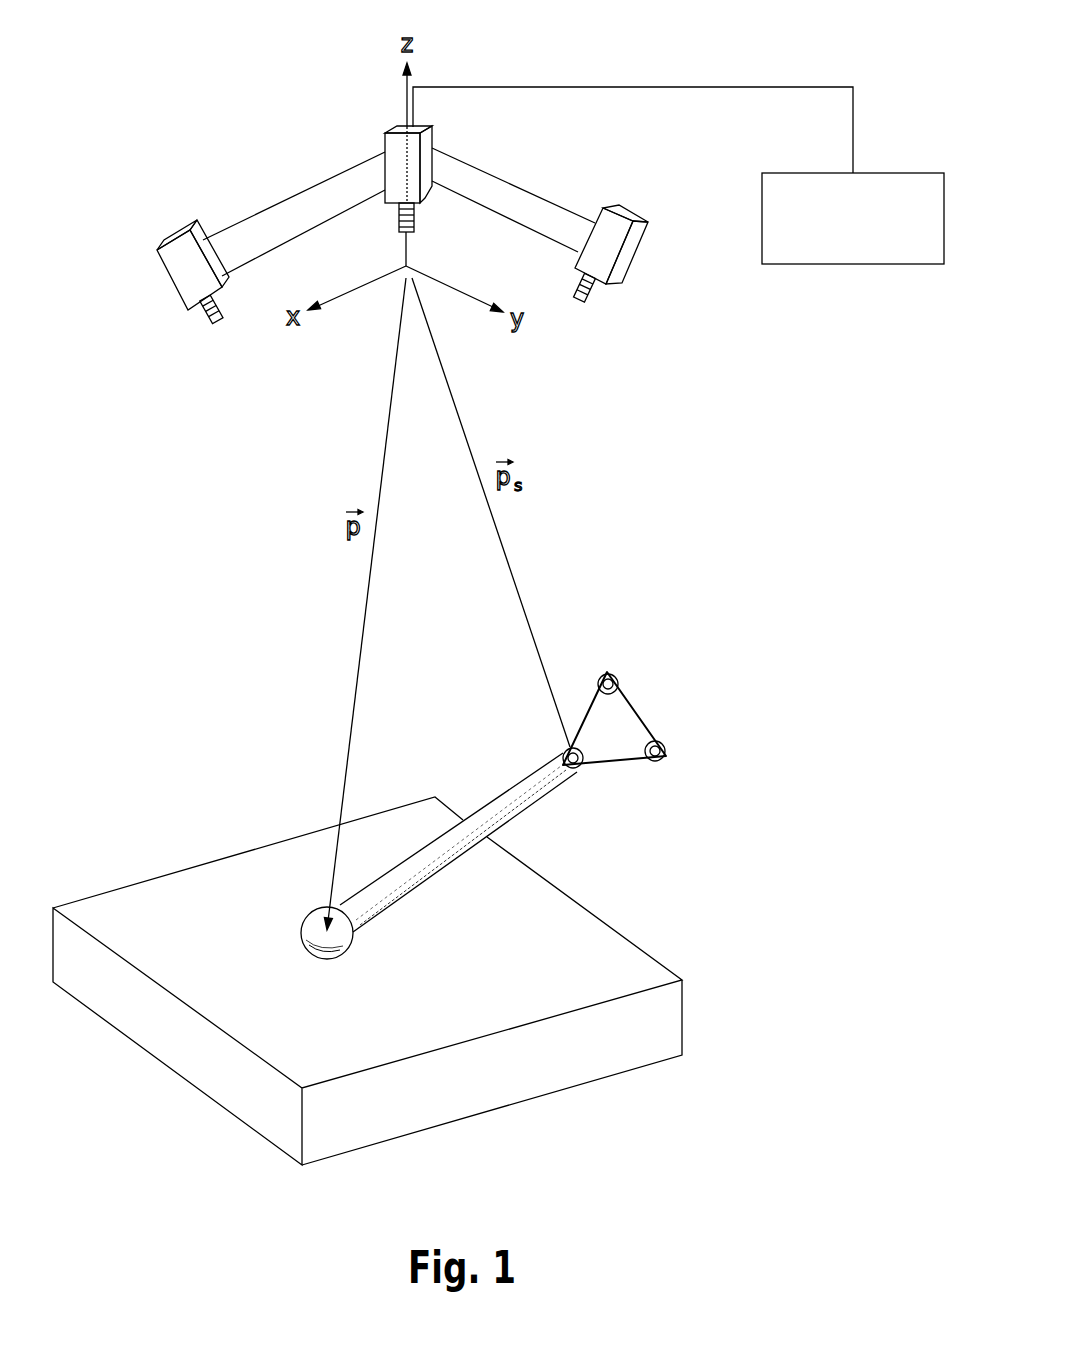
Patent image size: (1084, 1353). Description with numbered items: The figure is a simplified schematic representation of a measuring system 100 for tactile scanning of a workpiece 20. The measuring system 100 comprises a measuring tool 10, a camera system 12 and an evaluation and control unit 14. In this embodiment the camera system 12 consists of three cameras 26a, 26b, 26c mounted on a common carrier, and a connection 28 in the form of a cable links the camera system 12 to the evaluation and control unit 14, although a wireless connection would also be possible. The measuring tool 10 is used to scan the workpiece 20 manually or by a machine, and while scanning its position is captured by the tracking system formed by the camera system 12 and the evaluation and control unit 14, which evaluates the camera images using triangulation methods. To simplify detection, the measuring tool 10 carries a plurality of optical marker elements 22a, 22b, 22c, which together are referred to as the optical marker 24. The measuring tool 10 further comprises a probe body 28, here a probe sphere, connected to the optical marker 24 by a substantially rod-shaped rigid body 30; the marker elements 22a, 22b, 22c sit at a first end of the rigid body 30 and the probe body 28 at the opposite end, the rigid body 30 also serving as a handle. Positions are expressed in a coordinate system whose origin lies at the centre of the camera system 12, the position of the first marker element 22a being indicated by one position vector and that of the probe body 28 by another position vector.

The measuring system 100 is at (394, 190).
The measuring tool 10 is at (555, 772).
The camera system 12 is at (285, 212).
The evaluation and control unit 14 is at (899, 187).
The workpiece 20 is at (575, 1073).
The first marker element 22a is at (590, 770).
The marker element 22b is at (600, 672).
The marker element 22c is at (668, 760).
The optical marker 24 is at (662, 724).
The camera 26a is at (183, 274).
The camera 26b is at (393, 152).
The camera 26c is at (637, 255).
The probe body 28 is at (659, 88).
The rigid body 30 is at (452, 865).